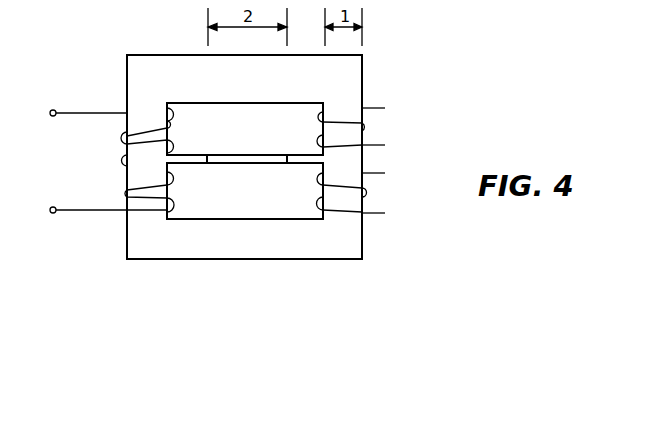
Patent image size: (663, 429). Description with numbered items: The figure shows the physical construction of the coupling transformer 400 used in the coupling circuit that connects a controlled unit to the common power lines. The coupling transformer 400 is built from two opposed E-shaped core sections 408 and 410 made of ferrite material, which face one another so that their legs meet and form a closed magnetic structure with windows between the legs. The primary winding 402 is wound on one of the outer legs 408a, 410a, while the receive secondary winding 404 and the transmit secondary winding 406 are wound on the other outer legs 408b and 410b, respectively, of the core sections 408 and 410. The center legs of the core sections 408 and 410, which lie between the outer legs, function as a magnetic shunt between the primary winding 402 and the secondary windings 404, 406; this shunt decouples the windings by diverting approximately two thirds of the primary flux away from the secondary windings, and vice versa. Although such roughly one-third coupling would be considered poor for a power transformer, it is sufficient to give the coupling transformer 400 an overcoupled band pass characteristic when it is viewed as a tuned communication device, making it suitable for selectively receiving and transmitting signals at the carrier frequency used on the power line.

The coupling transformer 400 is at (203, 44).
The primary winding 402 is at (168, 112).
The receive secondary winding 404 is at (385, 117).
The transmit secondary winding 406 is at (305, 219).
The E-shaped core section 408 is at (340, 87).
The outer leg 408a is at (148, 137).
The outer leg 408b is at (343, 136).
The E-shaped core section 410 is at (335, 243).
The outer leg 410a is at (147, 178).
The outer leg 410b is at (342, 202).